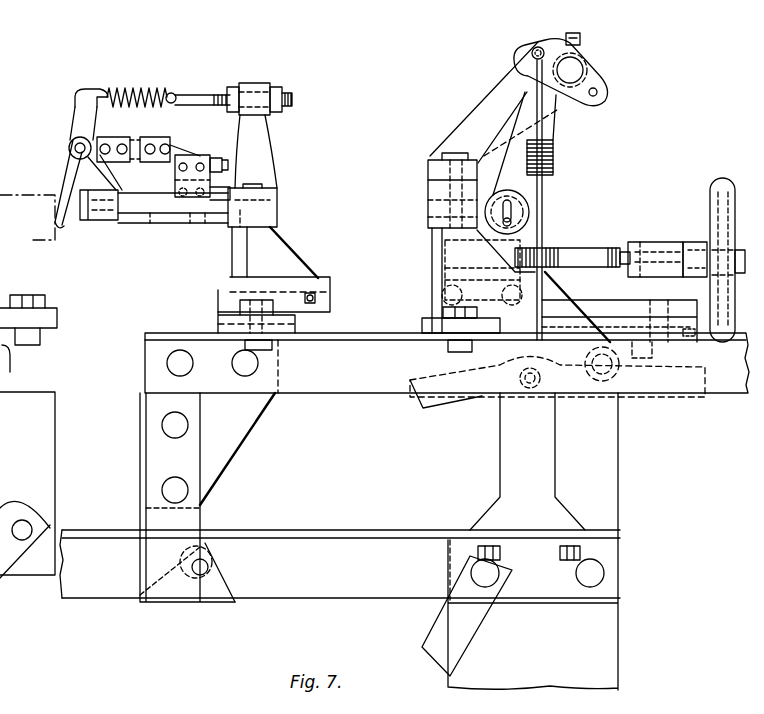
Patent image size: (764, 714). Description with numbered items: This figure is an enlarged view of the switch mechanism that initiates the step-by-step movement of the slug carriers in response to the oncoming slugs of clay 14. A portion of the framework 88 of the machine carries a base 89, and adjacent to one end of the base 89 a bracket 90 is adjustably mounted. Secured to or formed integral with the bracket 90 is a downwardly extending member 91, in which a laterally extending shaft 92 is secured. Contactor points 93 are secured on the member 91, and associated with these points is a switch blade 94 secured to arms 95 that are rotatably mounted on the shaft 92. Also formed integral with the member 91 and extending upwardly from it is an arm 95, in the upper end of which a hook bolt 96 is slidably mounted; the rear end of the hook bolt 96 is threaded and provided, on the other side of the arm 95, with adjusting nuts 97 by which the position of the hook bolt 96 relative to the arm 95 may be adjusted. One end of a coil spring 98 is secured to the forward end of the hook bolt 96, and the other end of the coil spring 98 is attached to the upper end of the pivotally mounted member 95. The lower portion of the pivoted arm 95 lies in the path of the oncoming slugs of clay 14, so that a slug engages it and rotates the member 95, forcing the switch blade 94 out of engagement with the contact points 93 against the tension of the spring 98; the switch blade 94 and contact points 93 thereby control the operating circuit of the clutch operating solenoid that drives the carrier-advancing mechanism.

The slugs of clay 14 is at (32, 243).
The framework 88 is at (5, 352).
The base 89 is at (216, 324).
The bracket 90 is at (290, 257).
The downwardly extending member 91 is at (108, 220).
The shaft 92 is at (72, 146).
The contactor points 93 is at (176, 182).
The switch blade 94 is at (188, 150).
The arm 95 is at (90, 119).
The hook bolt 96 is at (200, 94).
The adjusting nuts 97 is at (272, 86).
The coil spring 98 is at (136, 88).